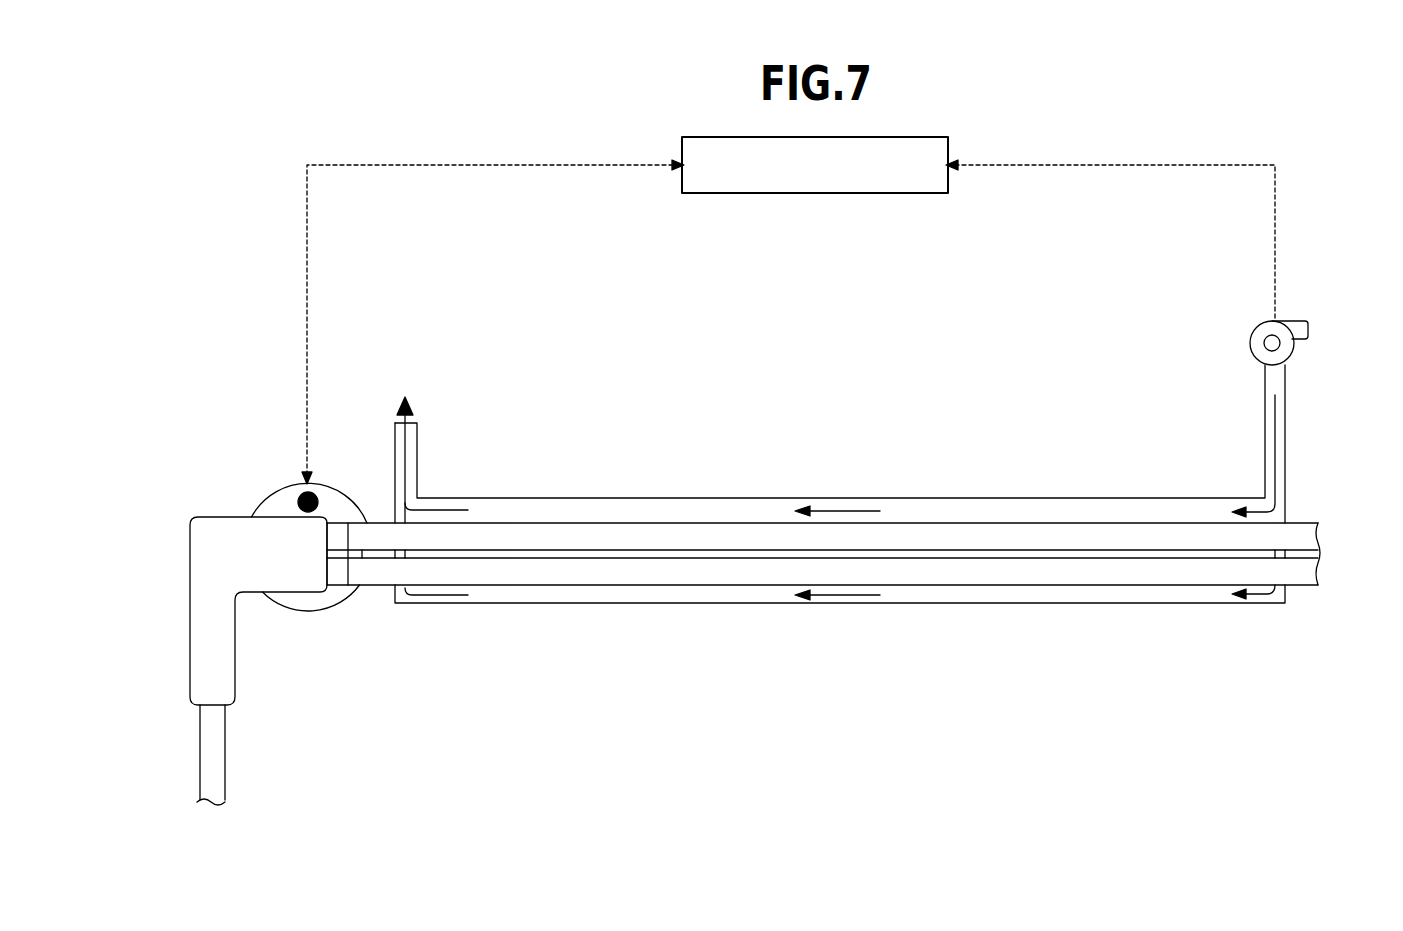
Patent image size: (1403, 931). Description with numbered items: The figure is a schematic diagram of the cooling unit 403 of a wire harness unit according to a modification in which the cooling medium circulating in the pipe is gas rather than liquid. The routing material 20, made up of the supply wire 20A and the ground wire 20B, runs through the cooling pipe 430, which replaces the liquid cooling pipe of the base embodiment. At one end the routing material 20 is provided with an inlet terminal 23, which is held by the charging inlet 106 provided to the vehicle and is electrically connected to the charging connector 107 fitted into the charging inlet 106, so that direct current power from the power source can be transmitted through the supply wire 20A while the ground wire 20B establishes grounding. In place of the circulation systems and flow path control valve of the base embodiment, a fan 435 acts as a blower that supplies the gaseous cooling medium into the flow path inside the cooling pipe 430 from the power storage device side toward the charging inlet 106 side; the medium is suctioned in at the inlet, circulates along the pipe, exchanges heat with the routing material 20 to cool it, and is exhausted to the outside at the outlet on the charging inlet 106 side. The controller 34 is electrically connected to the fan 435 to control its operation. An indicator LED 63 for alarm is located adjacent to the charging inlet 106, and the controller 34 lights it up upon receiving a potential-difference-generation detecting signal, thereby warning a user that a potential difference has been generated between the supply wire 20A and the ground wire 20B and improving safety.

The controller 34 is at (892, 137).
The cooling unit 403 is at (1110, 345).
The fan 435 is at (1296, 347).
The cooling pipe 430 is at (961, 496).
The routing material 20 is at (823, 617).
The supply wire 20A is at (675, 537).
The ground wire 20B is at (743, 572).
The inlet terminal 23 is at (340, 572).
The indicator LED 63 is at (296, 500).
The charging inlet 106 is at (305, 630).
The charging connector 107 is at (160, 605).